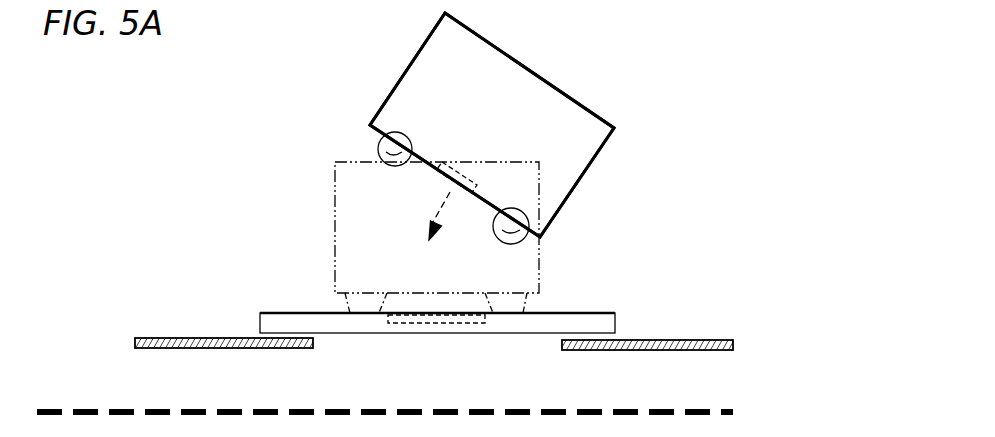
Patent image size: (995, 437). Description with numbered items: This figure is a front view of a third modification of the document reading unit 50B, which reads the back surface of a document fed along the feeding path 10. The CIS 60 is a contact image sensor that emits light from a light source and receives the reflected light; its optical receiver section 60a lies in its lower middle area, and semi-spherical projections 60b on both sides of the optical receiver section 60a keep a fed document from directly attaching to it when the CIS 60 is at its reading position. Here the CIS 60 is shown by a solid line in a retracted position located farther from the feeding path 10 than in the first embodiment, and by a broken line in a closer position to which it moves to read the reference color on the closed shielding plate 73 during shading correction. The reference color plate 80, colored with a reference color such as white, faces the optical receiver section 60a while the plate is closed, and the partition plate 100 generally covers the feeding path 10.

The document reading unit 50B is at (630, 82).
The CIS 60 is at (605, 152).
The optical receiver section 60a is at (440, 173).
The semi-spherical projections 60b is at (381, 150).
The shielding plate 73 is at (615, 322).
The reference color plate 80 is at (435, 323).
The partition plate 100 is at (304, 349).
The feeding path 10 is at (118, 408).